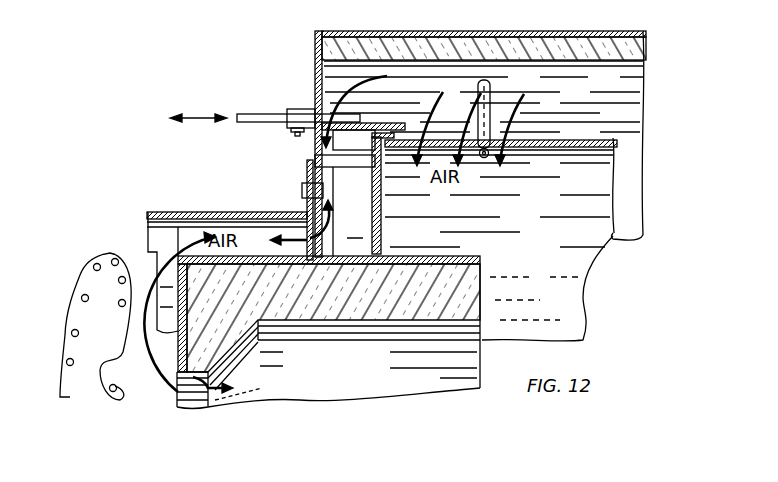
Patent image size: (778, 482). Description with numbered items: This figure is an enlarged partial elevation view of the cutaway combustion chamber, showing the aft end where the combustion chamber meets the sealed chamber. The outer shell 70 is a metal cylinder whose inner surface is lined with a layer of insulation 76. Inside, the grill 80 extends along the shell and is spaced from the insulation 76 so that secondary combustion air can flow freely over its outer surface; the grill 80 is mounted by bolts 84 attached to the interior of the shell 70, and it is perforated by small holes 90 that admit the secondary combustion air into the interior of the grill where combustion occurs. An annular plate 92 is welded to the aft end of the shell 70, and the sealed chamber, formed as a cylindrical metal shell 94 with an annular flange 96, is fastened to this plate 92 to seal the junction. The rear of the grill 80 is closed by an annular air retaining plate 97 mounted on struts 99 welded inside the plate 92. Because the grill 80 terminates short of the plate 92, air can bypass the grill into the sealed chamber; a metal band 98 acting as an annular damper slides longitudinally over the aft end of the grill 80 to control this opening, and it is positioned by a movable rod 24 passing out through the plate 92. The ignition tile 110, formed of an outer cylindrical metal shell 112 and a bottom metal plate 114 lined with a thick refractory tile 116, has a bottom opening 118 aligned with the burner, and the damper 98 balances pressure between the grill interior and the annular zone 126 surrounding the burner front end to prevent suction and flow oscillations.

The outer shell 70 is at (458, 32).
The layer of insulation 76 is at (572, 27).
The annular plate 92 is at (314, 60).
The movable rod 24 is at (260, 113).
The metal band 98 is at (382, 123).
The bolt 84 is at (492, 100).
The grill 80 is at (613, 136).
The holes 90 is at (612, 117).
The strut 99 is at (325, 157).
The annular flange 96 is at (307, 173).
The cylindrical metal shell 94 is at (216, 212).
The annular air retaining plate 97 is at (382, 230).
The outer cylindrical metal shell 112 is at (460, 258).
The bottom metal plate 114 is at (121, 330).
The annular zone 126 is at (122, 378).
The tile 116 is at (307, 306).
The ignition tile 110 is at (360, 318).
The opening 118 is at (243, 378).